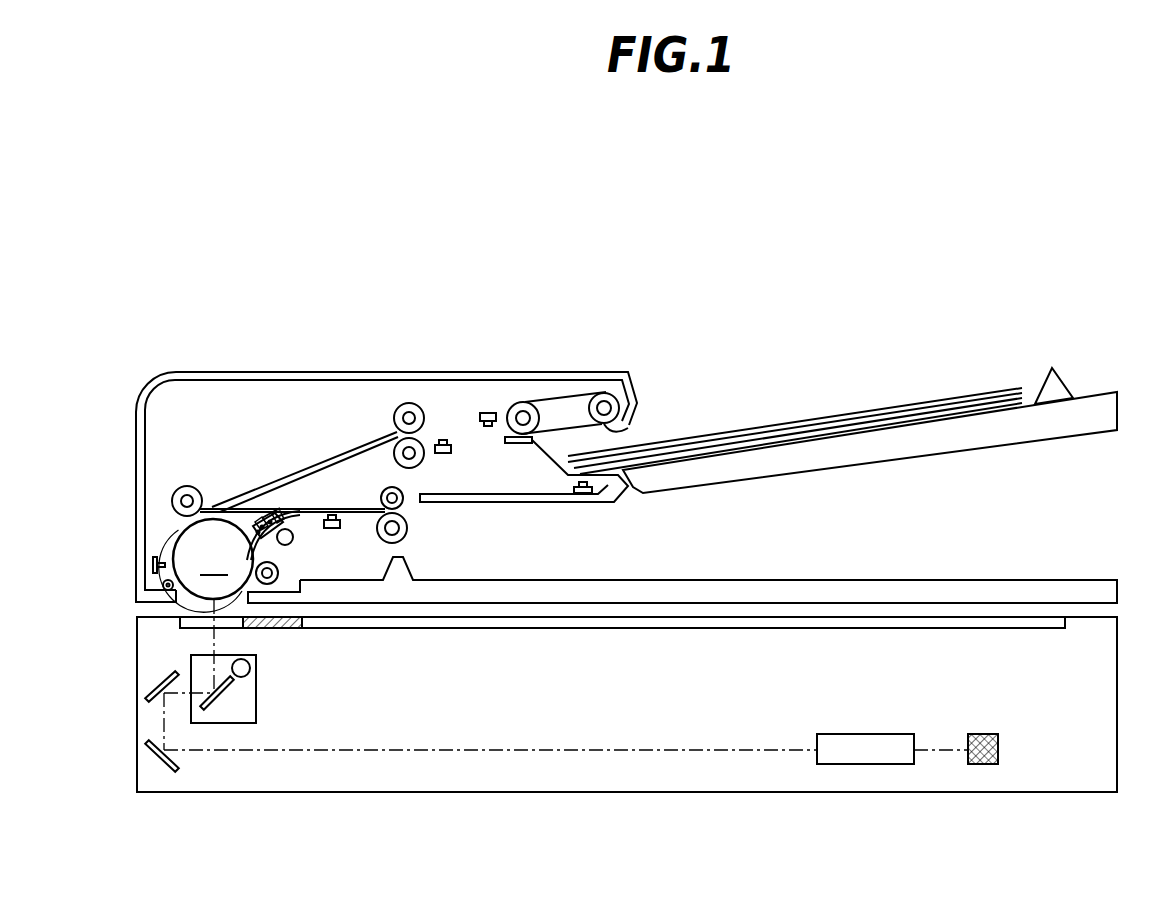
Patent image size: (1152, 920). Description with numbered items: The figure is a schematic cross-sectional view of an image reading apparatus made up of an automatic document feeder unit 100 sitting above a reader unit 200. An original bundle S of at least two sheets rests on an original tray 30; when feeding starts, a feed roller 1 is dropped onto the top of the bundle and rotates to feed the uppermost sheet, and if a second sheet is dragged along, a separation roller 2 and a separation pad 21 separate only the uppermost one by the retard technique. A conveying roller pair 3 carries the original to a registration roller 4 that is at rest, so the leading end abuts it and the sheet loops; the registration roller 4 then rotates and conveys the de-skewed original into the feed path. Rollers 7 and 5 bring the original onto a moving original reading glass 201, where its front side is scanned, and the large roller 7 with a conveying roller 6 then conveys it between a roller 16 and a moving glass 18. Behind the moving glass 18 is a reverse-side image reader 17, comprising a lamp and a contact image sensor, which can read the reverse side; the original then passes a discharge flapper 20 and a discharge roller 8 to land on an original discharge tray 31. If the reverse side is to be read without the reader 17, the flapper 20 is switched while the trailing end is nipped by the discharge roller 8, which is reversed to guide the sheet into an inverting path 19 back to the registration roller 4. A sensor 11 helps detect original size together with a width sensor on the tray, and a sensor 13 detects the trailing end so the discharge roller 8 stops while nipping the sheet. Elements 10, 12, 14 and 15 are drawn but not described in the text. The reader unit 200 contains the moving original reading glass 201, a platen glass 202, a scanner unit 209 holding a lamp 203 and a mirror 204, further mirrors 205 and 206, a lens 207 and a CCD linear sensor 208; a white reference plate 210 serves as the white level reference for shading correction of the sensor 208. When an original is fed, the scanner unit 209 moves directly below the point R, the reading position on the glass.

The automatic document feeder unit 100 is at (677, 268).
The reader unit 200 is at (628, 812).
The feed roller 1 is at (619, 431).
The separation roller 2 is at (524, 402).
The conveying roller pair 3 is at (407, 404).
The registration roller 4 is at (173, 495).
The roller 5 is at (162, 585).
The conveying roller 6 is at (282, 578).
The large roller 7 is at (230, 502).
The discharge roller 8 is at (408, 531).
The sensor 10 is at (488, 411).
The sensor 11 is at (446, 456).
The sensor 12 is at (152, 558).
The sensor 13 is at (341, 519).
The document sensor 14 is at (583, 494).
The stopper 15 is at (1057, 375).
The roller 16 is at (293, 540).
The reverse-side image reader 17 is at (242, 530).
The moving glass 18 is at (278, 512).
The inverting path 19 is at (268, 512).
The discharge flapper 20 is at (285, 515).
The separation pad 21 is at (520, 446).
The original tray 30 is at (1040, 452).
The original discharge tray 31 is at (787, 578).
The point R is at (206, 565).
The original bundle S is at (878, 402).
The moving original reading glass 201 is at (185, 624).
The platen glass 202 is at (490, 630).
The lamp 203 is at (251, 668).
The mirror 204 is at (236, 696).
The mirror 205 is at (154, 690).
The mirror 206 is at (154, 756).
The lens 207 is at (870, 735).
The CCD linear sensor 208 is at (984, 735).
The scanner unit 209 is at (256, 720).
The white reference plate 210 is at (278, 630).